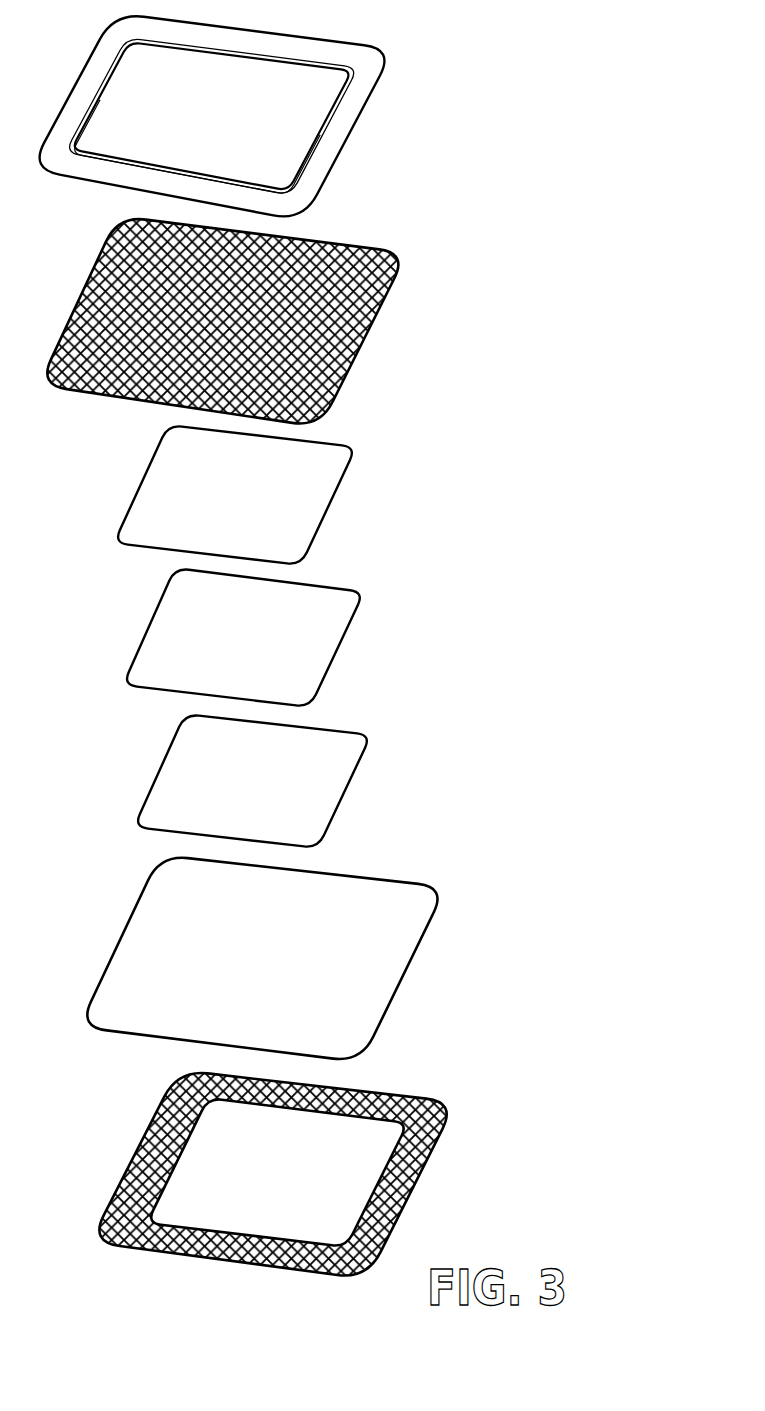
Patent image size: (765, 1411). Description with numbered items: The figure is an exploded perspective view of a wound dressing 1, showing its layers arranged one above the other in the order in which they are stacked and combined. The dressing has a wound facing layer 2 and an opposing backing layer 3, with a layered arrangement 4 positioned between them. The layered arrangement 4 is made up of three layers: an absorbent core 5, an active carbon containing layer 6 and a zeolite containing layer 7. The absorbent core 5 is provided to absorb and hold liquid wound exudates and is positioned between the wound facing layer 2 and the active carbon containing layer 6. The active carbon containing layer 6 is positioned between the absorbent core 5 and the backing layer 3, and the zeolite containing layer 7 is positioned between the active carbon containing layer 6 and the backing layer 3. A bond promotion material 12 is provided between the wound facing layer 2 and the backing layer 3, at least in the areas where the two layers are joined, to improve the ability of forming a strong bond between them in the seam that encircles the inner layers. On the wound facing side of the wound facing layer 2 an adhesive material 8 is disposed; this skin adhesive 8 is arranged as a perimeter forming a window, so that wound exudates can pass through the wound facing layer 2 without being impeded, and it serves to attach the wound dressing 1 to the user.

The wound dressing 1 is at (578, 272).
The wound facing layer 2 is at (258, 952).
The backing layer 3 is at (215, 105).
The layered arrangement 4 is at (440, 502).
The absorbent core 5 is at (263, 777).
The active carbon containing layer 6 is at (255, 632).
The zeolite containing layer 7 is at (247, 488).
The adhesive material 8 is at (402, 1178).
The bond promotion material 12 is at (220, 315).